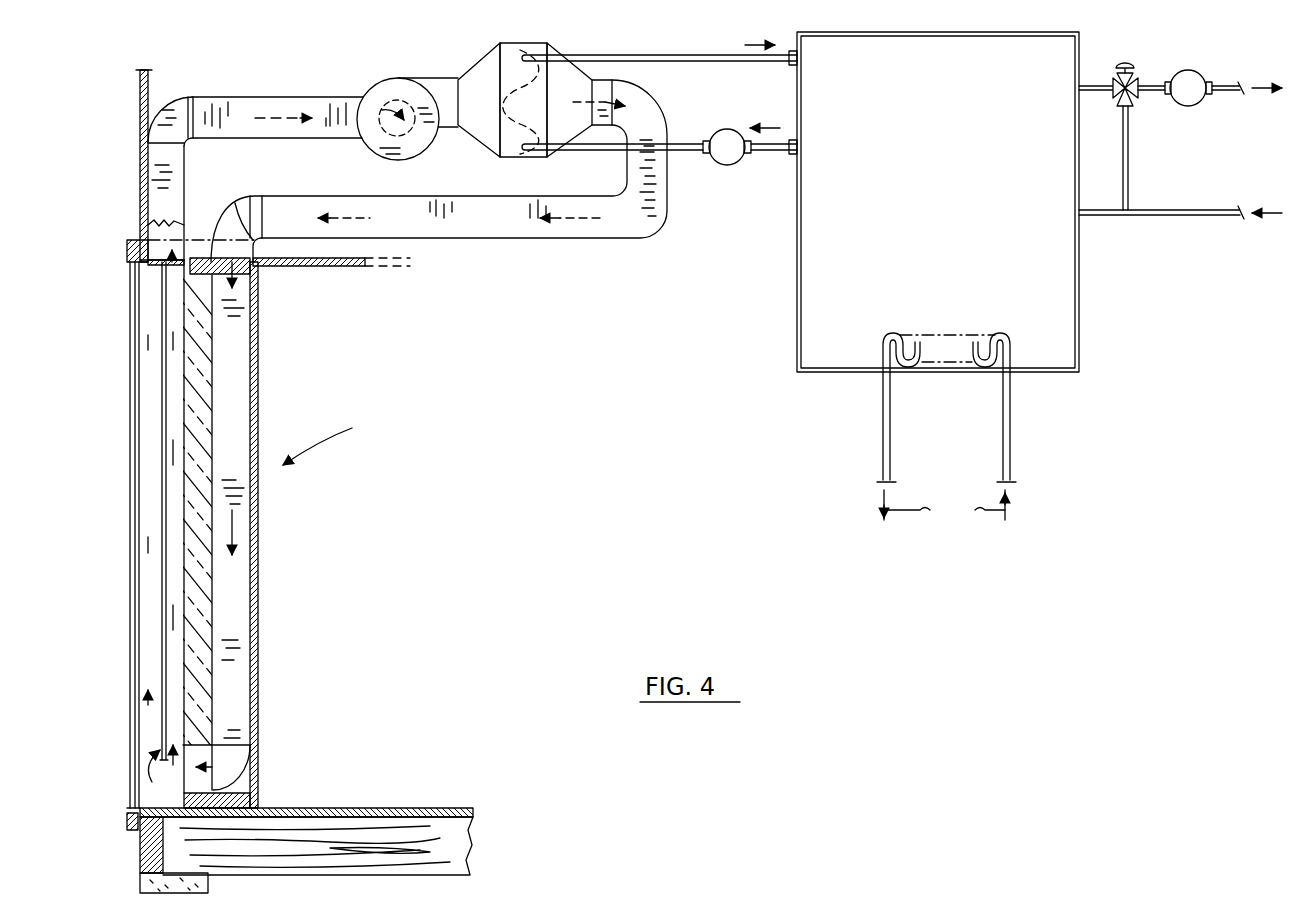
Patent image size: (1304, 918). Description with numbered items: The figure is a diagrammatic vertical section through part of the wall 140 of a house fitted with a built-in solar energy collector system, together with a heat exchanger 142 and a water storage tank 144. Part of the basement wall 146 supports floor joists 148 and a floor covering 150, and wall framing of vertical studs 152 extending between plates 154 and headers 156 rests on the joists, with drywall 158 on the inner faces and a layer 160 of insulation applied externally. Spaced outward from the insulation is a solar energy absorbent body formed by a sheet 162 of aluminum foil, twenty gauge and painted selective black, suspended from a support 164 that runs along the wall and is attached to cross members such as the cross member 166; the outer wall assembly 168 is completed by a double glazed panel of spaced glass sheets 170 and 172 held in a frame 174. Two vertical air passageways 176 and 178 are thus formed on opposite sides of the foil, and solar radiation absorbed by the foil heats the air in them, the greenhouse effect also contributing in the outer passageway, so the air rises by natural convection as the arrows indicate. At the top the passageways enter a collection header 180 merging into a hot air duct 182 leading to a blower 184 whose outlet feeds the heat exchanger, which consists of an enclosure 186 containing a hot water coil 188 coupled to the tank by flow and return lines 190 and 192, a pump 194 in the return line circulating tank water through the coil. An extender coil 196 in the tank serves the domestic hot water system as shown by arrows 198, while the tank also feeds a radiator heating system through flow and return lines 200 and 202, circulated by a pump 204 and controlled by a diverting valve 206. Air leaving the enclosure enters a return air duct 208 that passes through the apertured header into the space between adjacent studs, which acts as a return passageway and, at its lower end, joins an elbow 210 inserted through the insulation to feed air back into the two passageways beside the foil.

The wall 140 is at (340, 435).
The heat exchanger 142 is at (478, 52).
The water storage tank 144 is at (795, 350).
The basement wall 146 is at (140, 875).
The floor joists 148 is at (367, 818).
The floor covering 150 is at (440, 810).
The vertical studs 152 is at (245, 515).
The plates 154 is at (235, 800).
The headers 156 is at (255, 272).
The drywall 158 is at (262, 585).
The layer of insulation 160 is at (190, 377).
The sheet of aluminum foil 162 is at (158, 308).
The support 164 is at (150, 270).
The cross member 166 is at (150, 252).
The wall 168 is at (125, 508).
The sheet of glass 170 is at (130, 548).
The sheet of glass 172 is at (137, 598).
The frame 174 is at (135, 825).
The air passageway 176 is at (172, 407).
The air passageway 178 is at (153, 450).
The collection header 180 is at (253, 178).
The hot air duct 182 is at (172, 118).
The blower 184 is at (360, 95).
The enclosure 186 is at (527, 52).
The hot water coil 188 is at (510, 92).
The flow line 190 is at (662, 55).
The return line 192 is at (683, 146).
The pump 194 is at (736, 165).
The extender coil 196 is at (883, 435).
The arrows 198 is at (944, 496).
The flow line 200 is at (1222, 97).
The return line 202 is at (1197, 208).
The pump 204 is at (1190, 78).
The diverting valve 206 is at (1128, 78).
The return air duct 208 is at (645, 225).
The elbow 210 is at (237, 755).